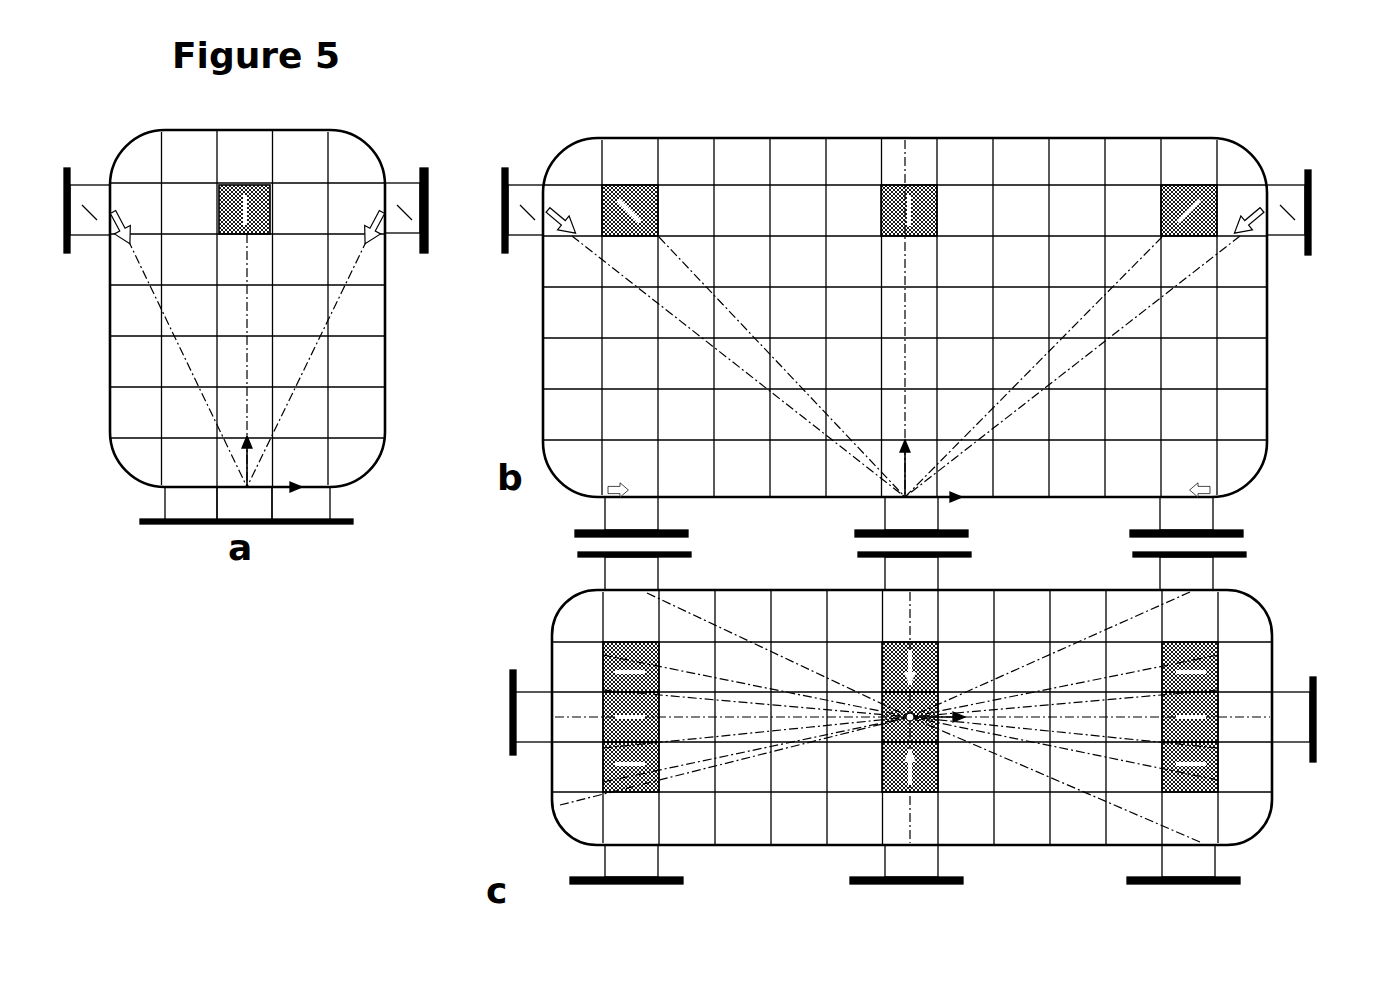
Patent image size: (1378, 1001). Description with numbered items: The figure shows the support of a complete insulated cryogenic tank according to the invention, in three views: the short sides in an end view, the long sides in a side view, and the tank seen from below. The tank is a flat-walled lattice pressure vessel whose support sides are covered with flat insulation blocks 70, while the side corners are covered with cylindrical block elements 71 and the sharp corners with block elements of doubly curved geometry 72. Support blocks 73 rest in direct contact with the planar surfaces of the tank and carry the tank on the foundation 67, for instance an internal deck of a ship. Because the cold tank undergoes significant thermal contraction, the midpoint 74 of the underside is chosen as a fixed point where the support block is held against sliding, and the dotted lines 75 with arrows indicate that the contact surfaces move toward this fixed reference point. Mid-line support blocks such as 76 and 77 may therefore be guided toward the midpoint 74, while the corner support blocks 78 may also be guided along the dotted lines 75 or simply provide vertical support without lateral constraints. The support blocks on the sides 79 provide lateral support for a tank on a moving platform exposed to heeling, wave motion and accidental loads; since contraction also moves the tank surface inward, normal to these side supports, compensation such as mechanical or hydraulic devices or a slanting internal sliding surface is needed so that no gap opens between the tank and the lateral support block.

The foundation 67 is at (147, 527).
The flat insulation blocks 70 is at (312, 420).
The cylindrical block elements 71 is at (567, 359).
The block elements of doubly curved geometry 72 is at (138, 457).
The support blocks 73 is at (250, 512).
The midpoint 74 is at (883, 507).
The dotted lines 75 is at (737, 682).
The mid-line support block 76 is at (603, 722).
The mid-line support block 77 is at (937, 640).
The corner support blocks 78 is at (648, 670).
The side support blocks 79 is at (903, 180).